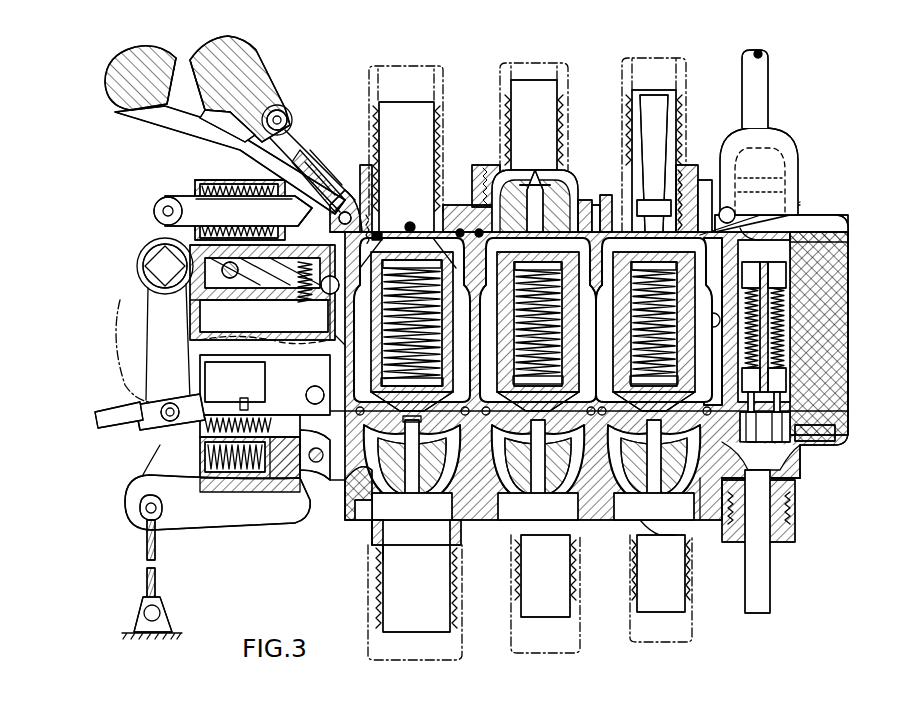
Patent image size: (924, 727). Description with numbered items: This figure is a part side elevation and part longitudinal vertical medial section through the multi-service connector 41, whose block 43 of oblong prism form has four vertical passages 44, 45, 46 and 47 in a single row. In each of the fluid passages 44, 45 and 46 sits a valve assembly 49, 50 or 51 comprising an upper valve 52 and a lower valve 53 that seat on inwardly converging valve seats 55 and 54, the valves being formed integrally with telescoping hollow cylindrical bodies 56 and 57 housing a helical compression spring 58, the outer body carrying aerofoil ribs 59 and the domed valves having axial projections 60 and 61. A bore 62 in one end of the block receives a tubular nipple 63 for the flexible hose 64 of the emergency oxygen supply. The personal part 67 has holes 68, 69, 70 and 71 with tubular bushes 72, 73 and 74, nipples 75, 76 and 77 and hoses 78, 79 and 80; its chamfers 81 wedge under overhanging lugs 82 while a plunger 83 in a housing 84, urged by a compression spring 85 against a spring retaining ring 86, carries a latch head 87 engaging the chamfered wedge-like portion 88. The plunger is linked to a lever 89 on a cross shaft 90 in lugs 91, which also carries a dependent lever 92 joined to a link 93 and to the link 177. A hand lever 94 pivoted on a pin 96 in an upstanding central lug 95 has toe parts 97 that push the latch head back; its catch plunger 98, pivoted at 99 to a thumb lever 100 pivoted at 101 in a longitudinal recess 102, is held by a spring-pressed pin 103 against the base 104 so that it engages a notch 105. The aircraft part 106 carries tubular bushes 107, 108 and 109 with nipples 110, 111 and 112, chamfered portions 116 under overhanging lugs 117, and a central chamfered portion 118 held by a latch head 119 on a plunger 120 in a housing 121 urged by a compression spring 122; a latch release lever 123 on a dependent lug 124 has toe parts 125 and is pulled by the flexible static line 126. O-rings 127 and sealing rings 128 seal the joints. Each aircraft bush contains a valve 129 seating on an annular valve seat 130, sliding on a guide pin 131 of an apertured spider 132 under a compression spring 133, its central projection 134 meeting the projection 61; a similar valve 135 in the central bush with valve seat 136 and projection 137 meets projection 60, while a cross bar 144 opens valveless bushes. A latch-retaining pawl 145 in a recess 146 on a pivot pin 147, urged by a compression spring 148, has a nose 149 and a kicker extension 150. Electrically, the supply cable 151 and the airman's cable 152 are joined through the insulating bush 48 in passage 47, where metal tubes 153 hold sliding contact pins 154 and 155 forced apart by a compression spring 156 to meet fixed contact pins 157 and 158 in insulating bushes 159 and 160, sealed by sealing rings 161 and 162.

The multi-service connector 41 is at (858, 341).
The block 43 is at (822, 292).
The passage 44 is at (372, 268).
The passage 45 is at (576, 240).
The passage 46 is at (690, 180).
The passage 47 is at (842, 233).
The electrically insulating bush 48 is at (782, 216).
The valve assembly 49 is at (456, 272).
The valve assembly 50 is at (606, 196).
The valve assembly 51 is at (702, 200).
The valve 52 is at (384, 235).
The valve 53 is at (352, 490).
The valve seat 54 is at (442, 165).
The valve seat 55 is at (462, 407).
The hollow cylindrical body 56 is at (345, 335).
The hollow cylindrical body 57 is at (305, 372).
The helical compression spring 58 is at (422, 238).
The ribs 59 is at (345, 335).
The axial projection 60 is at (398, 242).
The axial projection 61 is at (360, 512).
The bore 62 is at (345, 300).
The tubular nipple 63 is at (192, 322).
The flexible hose 64 is at (122, 332).
The personal part 67 is at (727, 207).
The hole 68 is at (352, 205).
The hole 69 is at (586, 198).
The hole 70 is at (672, 200).
The hole 71 is at (759, 171).
The tubular bush 72 is at (458, 200).
The tubular bush 73 is at (594, 205).
The tubular bush 74 is at (647, 180).
The tubular nipple 75 is at (438, 115).
The tubular nipple 76 is at (560, 90).
The tubular nipple 77 is at (670, 92).
The hose 78 is at (372, 70).
The hose 79 is at (504, 64).
The hose 80 is at (630, 62).
The chamfer 81 is at (802, 221).
The overhanging lugs 82 is at (832, 215).
The plunger 83 is at (232, 222).
The housing 84 is at (202, 182).
The compression spring 85 is at (228, 183).
The spring retaining ring 86 is at (196, 195).
The latch head 87 is at (296, 215).
The chamfered wedge-like portion 88 is at (265, 222).
The lever 89 is at (156, 215).
The cross shaft 90 is at (222, 268).
The lugs 91 is at (142, 296).
The dependent lever 92 is at (152, 402).
The link 93 is at (104, 411).
The hand lever 94 is at (106, 88).
The upstanding central lug 95 is at (322, 170).
The transverse pivot pin 96 is at (316, 180).
The toe parts 97 is at (335, 195).
The plunger 98 is at (286, 126).
The pivot 99 is at (281, 116).
The thumb lever 100 is at (276, 105).
The pivot 101 is at (250, 135).
The longitudinal recess 102 is at (192, 58).
The spring-pressed pin 103 is at (205, 115).
The base 104 is at (188, 118).
The notch 105 is at (305, 150).
The aircraft part 106 is at (712, 522).
The tubular bush 107 is at (348, 512).
The tubular bush 108 is at (486, 522).
The tubular bush 109 is at (624, 520).
The tubular nipple 110 is at (372, 620).
The tubular nipple 111 is at (520, 600).
The tubular nipple 112 is at (637, 598).
The chamfered portions 116 is at (802, 458).
The overhanging lugs 117 is at (808, 446).
The central chamfered portion 118 is at (298, 420).
The latch head 119 is at (212, 455).
The plunger 120 is at (202, 430).
The housing 121 is at (234, 485).
The compression spring 122 is at (226, 425).
The latch release lever 123 is at (200, 510).
The dependent lug 124 is at (290, 495).
The toe parts 125 is at (296, 475).
The flexible static line 126 is at (157, 555).
The O-rings 127 is at (596, 238).
The sealing rings 128 is at (657, 522).
The valve 129 is at (412, 518).
The annular valve seat 130 is at (330, 472).
The central guide pin 131 is at (374, 525).
The apertured spider 132 is at (440, 522).
The compression spring 133 is at (382, 548).
The central projection 134 is at (418, 414).
The valve 135 is at (522, 200).
The valve seat 136 is at (576, 172).
The projection 137 is at (536, 190).
The cross bar 144 is at (410, 222).
The latch-retaining pawl 145 is at (278, 288).
The recess 146 is at (144, 276).
The pivot pin 147 is at (192, 262).
The compression spring 148 is at (304, 300).
The nose 149 is at (232, 303).
The extension 150 is at (374, 232).
The supply cable 151 is at (746, 595).
The airman's cable 152 is at (768, 70).
The metal tube 153 is at (795, 325).
The contact pin 154 is at (802, 248).
The contact pin 155 is at (786, 362).
The compression spring 156 is at (778, 266).
The fixed contact pins 157 is at (822, 207).
The fixed contact pins 158 is at (782, 422).
The insulating bush 159 is at (782, 200).
The insulating bush 160 is at (802, 436).
The sealing ring 161 is at (772, 211).
The sealing ring 162 is at (822, 392).
The link 177 is at (165, 440).